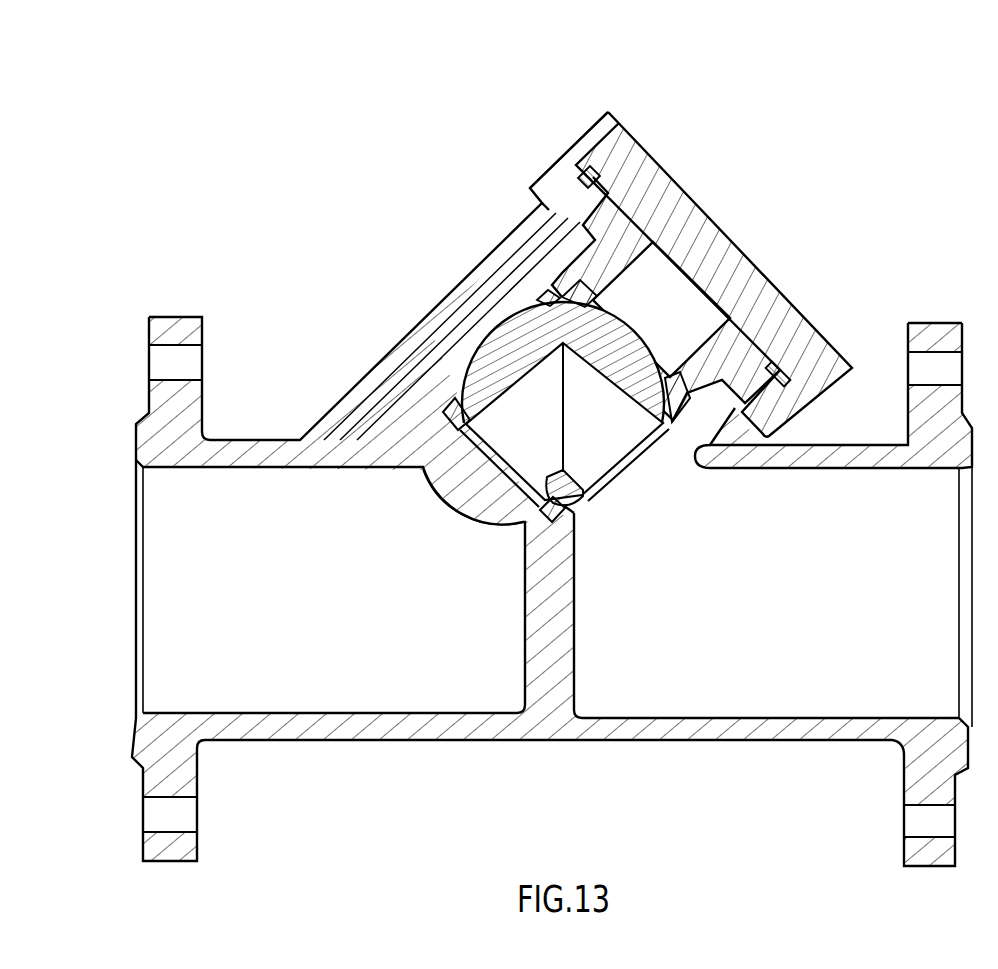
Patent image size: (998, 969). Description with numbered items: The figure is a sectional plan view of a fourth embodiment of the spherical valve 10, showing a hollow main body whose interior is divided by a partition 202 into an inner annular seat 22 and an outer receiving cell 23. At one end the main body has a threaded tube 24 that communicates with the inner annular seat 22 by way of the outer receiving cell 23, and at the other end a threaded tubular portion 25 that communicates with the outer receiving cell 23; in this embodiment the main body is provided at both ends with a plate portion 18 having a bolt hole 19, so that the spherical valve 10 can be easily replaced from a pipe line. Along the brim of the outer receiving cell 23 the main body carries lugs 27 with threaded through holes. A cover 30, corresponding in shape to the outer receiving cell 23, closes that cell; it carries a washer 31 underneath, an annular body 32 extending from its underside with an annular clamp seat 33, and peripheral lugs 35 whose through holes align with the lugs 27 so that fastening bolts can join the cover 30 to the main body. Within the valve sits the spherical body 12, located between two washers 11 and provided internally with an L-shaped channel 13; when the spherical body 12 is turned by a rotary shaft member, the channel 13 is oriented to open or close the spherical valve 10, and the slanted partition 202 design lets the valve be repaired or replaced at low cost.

The spherical valve 10 is at (694, 161).
The washers 11 is at (452, 420).
The spherical body 12 is at (492, 340).
The L-shaped channel 13 is at (518, 415).
The plate portion 18 is at (155, 422).
The bolt hole 19 is at (160, 357).
The inner annular seat 22 is at (460, 497).
The outer receiving cell 23 is at (708, 413).
The threaded tube 24 is at (277, 705).
The threaded tubular portion 25 is at (848, 712).
The lugs 27 is at (550, 180).
The cover 30 is at (707, 236).
The washer 31 is at (585, 168).
The annular body 32 is at (582, 268).
The annular clamp seat 33 is at (566, 282).
The lugs 35 is at (598, 130).
The partition wall 202 is at (550, 718).